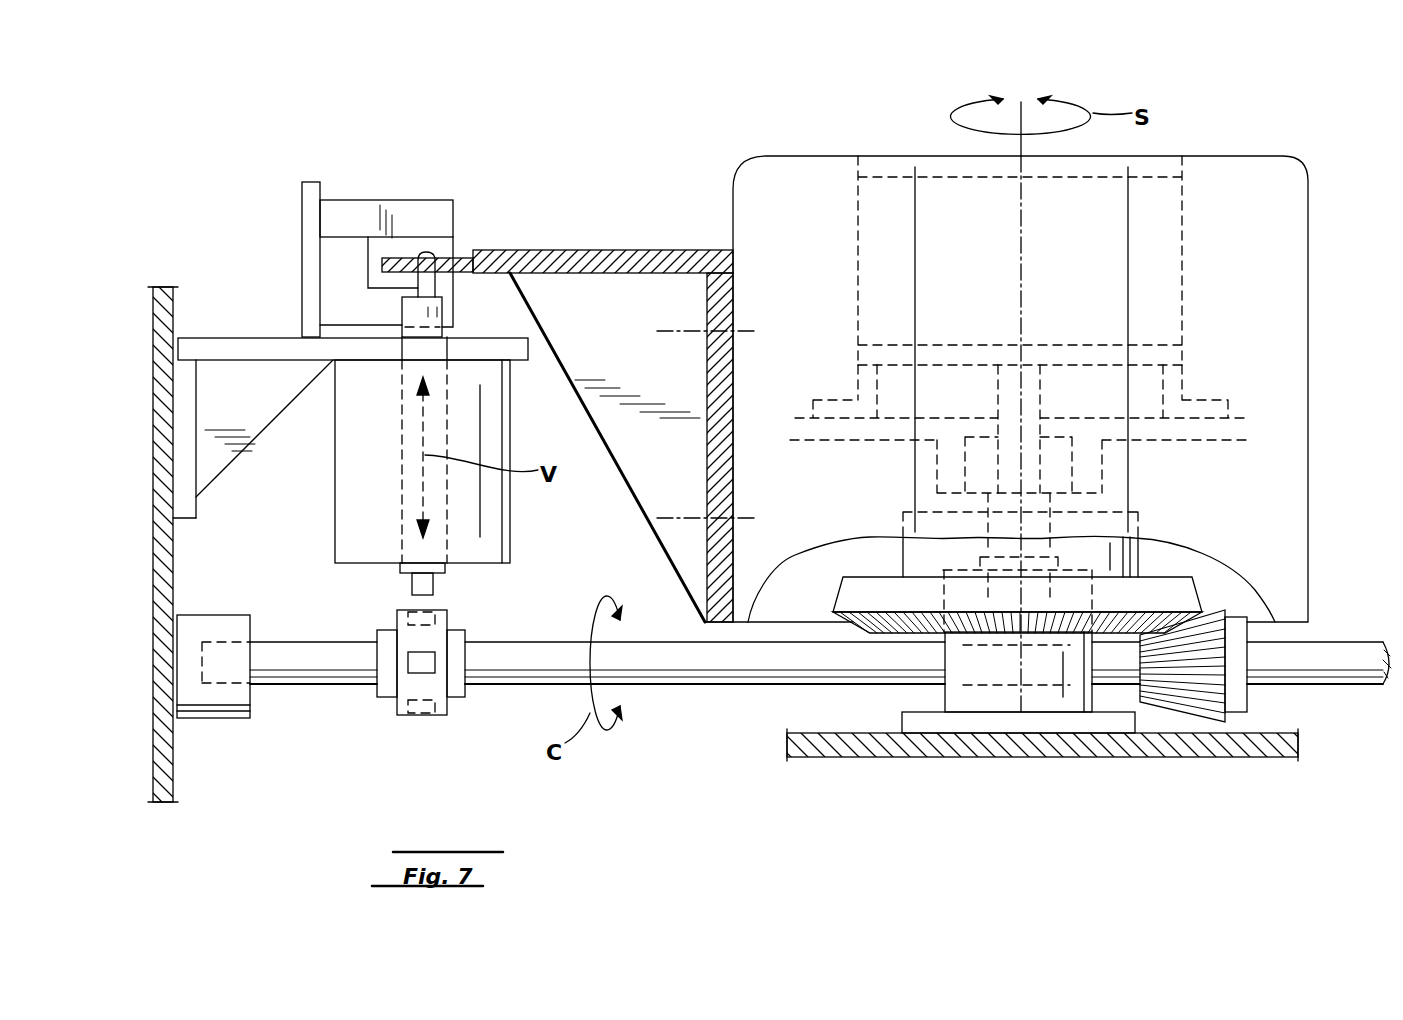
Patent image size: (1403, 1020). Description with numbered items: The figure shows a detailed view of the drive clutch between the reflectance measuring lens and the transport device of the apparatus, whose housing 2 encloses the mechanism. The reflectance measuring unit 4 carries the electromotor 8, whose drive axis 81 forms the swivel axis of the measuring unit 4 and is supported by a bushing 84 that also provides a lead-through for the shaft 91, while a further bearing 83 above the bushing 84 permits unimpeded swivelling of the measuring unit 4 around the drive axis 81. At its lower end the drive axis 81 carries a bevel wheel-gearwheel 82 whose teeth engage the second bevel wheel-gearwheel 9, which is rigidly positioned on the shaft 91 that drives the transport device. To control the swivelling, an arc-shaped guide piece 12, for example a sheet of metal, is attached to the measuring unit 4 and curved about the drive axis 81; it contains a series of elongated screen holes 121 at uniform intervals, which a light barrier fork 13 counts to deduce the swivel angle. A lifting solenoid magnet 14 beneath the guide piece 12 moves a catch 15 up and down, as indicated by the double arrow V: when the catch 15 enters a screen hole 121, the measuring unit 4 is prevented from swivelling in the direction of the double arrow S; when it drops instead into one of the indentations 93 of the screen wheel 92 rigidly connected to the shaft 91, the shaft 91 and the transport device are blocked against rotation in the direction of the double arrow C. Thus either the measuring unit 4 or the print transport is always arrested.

The housing 2 is at (160, 757).
The reflectance measuring unit 4 is at (1310, 357).
The electromotor 8 is at (1170, 222).
The second bevel wheel-gearwheel 9 is at (1203, 697).
The arc-shaped guide piece 12 is at (620, 258).
The light barrier fork 13 is at (412, 210).
The lifting solenoid magnet 14 is at (350, 493).
The catch 15 is at (437, 412).
The drive axis 81 is at (1028, 393).
The bevel gear 82 is at (867, 624).
The bearing 83 is at (1058, 468).
The bushing 84 is at (1043, 695).
The shaft 91 is at (305, 672).
The screen wheel 92 is at (437, 640).
The indentations 93 is at (412, 612).
The screen holes 121 is at (452, 258).